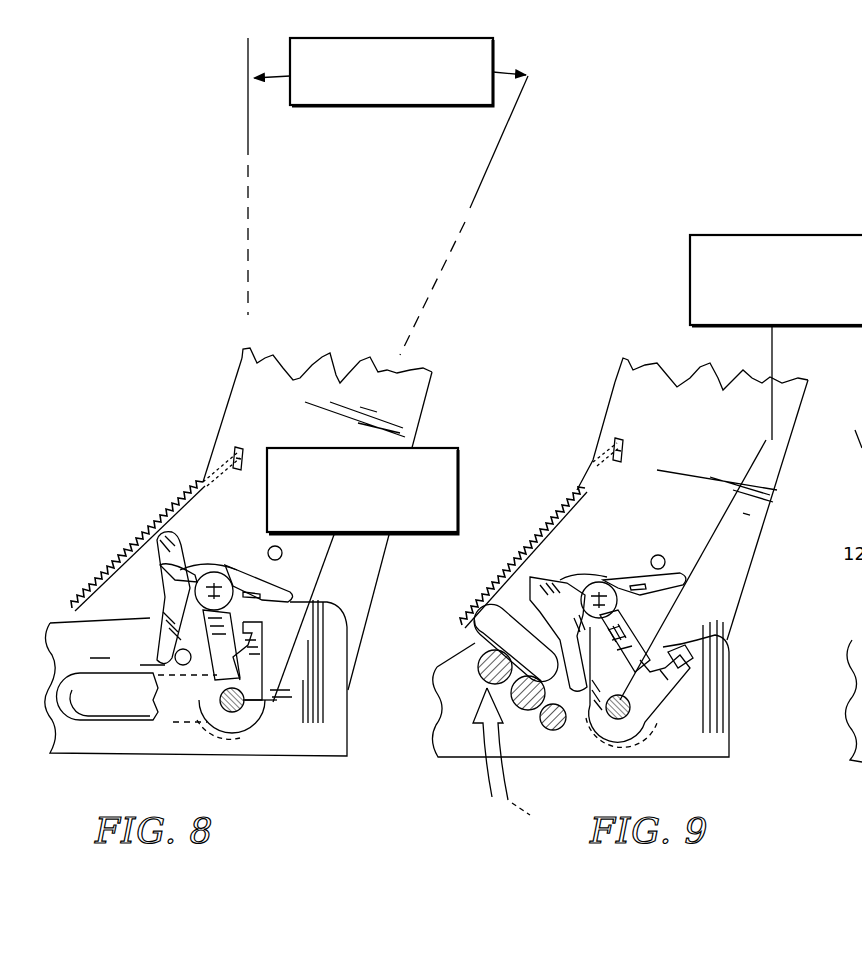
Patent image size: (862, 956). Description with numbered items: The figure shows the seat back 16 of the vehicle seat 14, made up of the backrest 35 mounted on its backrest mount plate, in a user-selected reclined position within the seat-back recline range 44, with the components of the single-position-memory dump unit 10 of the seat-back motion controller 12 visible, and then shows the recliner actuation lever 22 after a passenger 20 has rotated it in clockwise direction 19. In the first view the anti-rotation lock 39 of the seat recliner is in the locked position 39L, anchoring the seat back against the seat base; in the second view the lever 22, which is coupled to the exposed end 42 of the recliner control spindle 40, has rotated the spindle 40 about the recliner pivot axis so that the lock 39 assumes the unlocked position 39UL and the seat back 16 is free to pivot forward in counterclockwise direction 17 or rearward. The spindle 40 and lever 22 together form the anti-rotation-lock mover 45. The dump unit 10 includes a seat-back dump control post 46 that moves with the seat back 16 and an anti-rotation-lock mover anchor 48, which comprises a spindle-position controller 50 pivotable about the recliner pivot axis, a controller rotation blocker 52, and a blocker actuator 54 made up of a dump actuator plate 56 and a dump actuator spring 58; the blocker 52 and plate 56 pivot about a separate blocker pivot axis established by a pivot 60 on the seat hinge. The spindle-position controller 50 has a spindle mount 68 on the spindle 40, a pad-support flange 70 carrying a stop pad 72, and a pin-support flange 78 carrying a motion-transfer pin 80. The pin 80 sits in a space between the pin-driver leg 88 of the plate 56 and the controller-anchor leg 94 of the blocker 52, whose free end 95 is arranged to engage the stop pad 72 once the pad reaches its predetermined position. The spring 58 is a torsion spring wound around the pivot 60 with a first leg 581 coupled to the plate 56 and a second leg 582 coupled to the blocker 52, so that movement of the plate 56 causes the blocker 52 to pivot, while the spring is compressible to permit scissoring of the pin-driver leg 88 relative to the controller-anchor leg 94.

In FIG. 8, the single-position-memory dump unit 10 is at (288, 573).
In FIG. 9, the single-position-memory dump unit 10 is at (639, 531).
In FIG. 8, the seat-back motion controller 12 is at (130, 570).
In FIG. 9, the seat-back motion controller 12 is at (550, 573).
In FIG. 8, the vehicle seat 14 is at (203, 400).
In FIG. 9, the vehicle seat 14 is at (570, 427).
In FIG. 8, the seat back 16 is at (442, 387).
In FIG. 9, the seat back 16 is at (606, 392).
In FIG. 9, the counterclockwise direction 17 is at (822, 540).
In FIG. 9, the clockwise direction 19 is at (497, 773).
In FIG. 9, the passenger 20 is at (528, 712).
In FIG. 8, the recliner actuation lever 22 is at (115, 737).
In FIG. 9, the recliner actuation lever 22 is at (472, 644).
In FIG. 8, the backrest 35 is at (277, 372).
In FIG. 9, the backrest 35 is at (645, 398).
In FIG. 8, the anti-rotation lock 39 is at (305, 448).
In FIG. 9, the anti-rotation lock 39 is at (689, 288).
In FIG. 8, the locked position 39L is at (435, 444).
In FIG. 9, the unlocked position 39UL is at (803, 228).
In FIG. 8, the recliner control spindle 40 is at (255, 745).
In FIG. 9, the recliner control spindle 40 is at (635, 749).
In FIG. 8, the exposed end 42 is at (232, 714).
In FIG. 9, the exposed end 42 is at (620, 720).
In FIG. 8, the seat-back recline range 44 is at (413, 107).
In FIG. 8, the anti-rotation-lock mover 45 is at (222, 716).
In FIG. 8, the seat-back dump control post 46 is at (282, 551).
In FIG. 9, the seat-back dump control post 46 is at (665, 557).
In FIG. 8, the anti-rotation-lock mover anchor 48 is at (152, 622).
In FIG. 9, the anti-rotation-lock mover anchor 48 is at (679, 577).
In FIG. 8, the spindle-position controller 50 is at (277, 700).
In FIG. 9, the spindle-position controller 50 is at (662, 709).
In FIG. 8, the controller rotation blocker 52 is at (295, 603).
In FIG. 9, the controller rotation blocker 52 is at (647, 605).
In FIG. 8, the blocker actuator 54 is at (210, 486).
In FIG. 9, the blocker actuator 54 is at (583, 573).
In FIG. 8, the dump actuator plate 56 is at (121, 556).
In FIG. 9, the dump actuator plate 56 is at (521, 582).
In FIG. 8, the dump actuator spring 58 is at (203, 562).
In FIG. 8, the pivot 60 is at (225, 569).
In FIG. 9, the pivot 60 is at (607, 581).
In FIG. 8, the spindle mount 68 is at (257, 722).
In FIG. 8, the pad-support flange 70 is at (272, 672).
In FIG. 9, the pad-support flange 70 is at (662, 711).
In FIG. 8, the stop pad 72 is at (264, 633).
In FIG. 9, the stop pad 72 is at (675, 692).
In FIG. 8, the pin-support flange 78 is at (150, 700).
In FIG. 8, the motion-transfer pin 80 is at (175, 658).
In FIG. 8, the pin-driver leg 88 is at (172, 650).
In FIG. 9, the pin-driver leg 88 is at (577, 667).
In FIG. 8, the controller-anchor leg 94 is at (217, 630).
In FIG. 9, the controller-anchor leg 94 is at (630, 633).
In FIG. 8, the free end 95 is at (297, 687).
In FIG. 9, the free end 95 is at (690, 640).
In FIG. 8, the first leg 581 is at (160, 585).
In FIG. 8, the second leg 582 is at (214, 605).